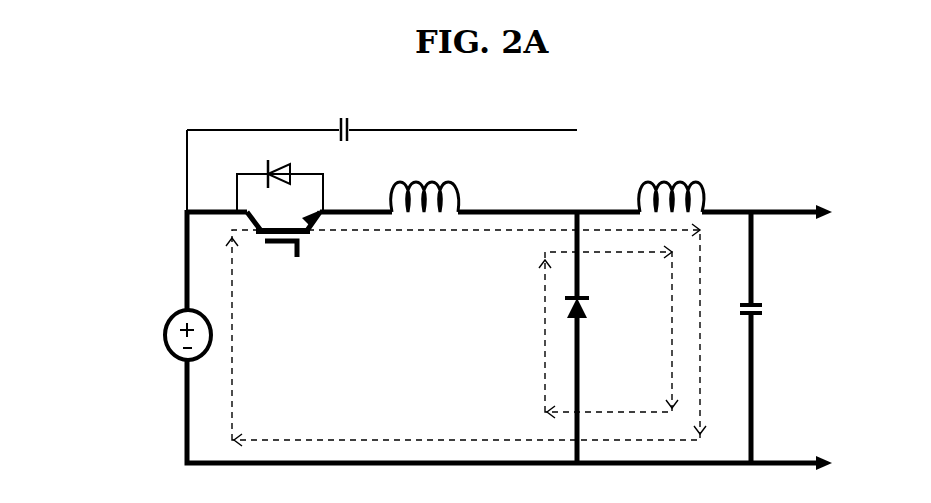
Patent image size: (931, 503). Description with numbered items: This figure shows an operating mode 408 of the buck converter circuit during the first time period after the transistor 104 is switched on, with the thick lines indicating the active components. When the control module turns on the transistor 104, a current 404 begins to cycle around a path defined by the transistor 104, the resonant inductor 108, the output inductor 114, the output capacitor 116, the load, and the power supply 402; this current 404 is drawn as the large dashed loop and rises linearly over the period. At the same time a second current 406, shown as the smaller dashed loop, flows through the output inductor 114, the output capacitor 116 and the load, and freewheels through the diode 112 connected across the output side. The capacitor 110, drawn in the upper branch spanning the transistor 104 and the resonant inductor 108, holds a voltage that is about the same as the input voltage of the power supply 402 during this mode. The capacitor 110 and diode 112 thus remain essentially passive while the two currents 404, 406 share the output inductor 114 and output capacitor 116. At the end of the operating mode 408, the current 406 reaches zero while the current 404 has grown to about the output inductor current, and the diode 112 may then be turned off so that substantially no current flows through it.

The transistor 104 is at (277, 255).
The resonant inductor 108 is at (394, 186).
The capacitor 110 is at (342, 121).
The diode 112 is at (622, 302).
The output inductor 114 is at (700, 185).
The output capacitor 116 is at (760, 303).
The power supply 402 is at (166, 340).
The current 404 is at (403, 232).
The current 406 is at (614, 256).
The operating mode 408 is at (126, 175).